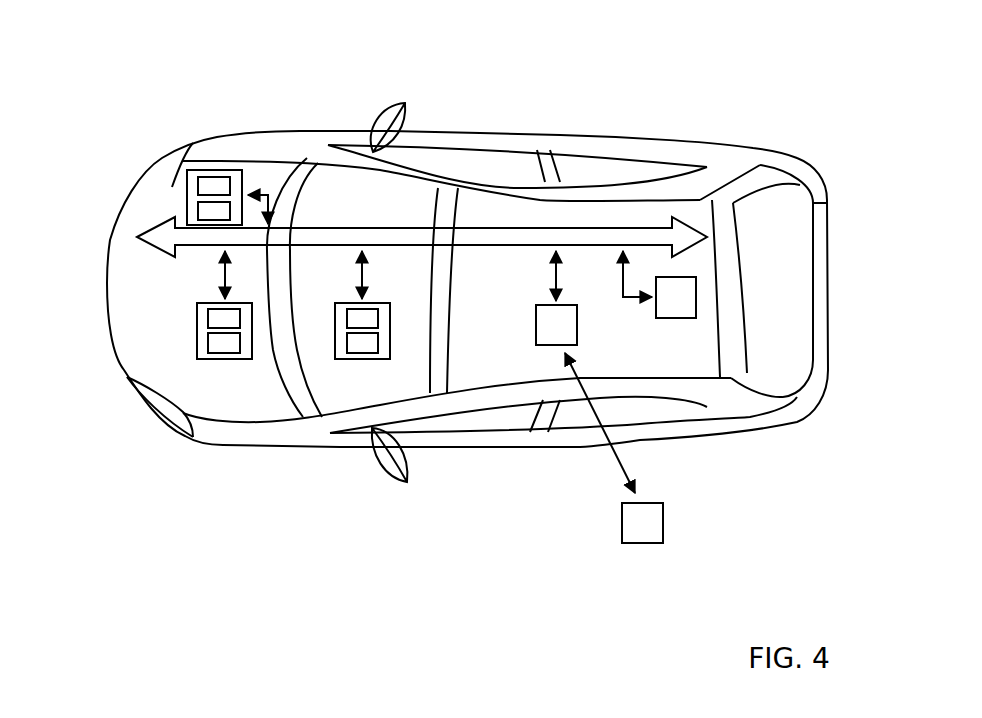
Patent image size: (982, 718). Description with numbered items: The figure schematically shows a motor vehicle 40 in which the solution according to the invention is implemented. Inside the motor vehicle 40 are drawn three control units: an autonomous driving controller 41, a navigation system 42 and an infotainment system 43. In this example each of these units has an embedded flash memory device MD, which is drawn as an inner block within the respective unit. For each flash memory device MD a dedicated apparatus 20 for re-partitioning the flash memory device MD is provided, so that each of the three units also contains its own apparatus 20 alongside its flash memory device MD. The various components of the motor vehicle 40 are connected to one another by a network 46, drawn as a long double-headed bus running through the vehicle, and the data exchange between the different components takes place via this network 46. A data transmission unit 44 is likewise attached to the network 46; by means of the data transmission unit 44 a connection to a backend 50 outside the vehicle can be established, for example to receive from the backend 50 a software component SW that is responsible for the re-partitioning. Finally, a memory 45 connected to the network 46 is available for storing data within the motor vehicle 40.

The motor vehicle 40 is at (720, 146).
The autonomous driving controller 41 is at (223, 360).
The navigation system 42 is at (219, 170).
The infotainment system 43 is at (350, 360).
The data transmission unit 44 is at (553, 345).
The memory 45 is at (670, 318).
The network 46 is at (597, 237).
The backend 50 is at (643, 543).
The apparatus for re-partitioning the flash memory device 20 is at (198, 209).
The flash memory device MD is at (198, 186).
The software component SW is at (593, 402).